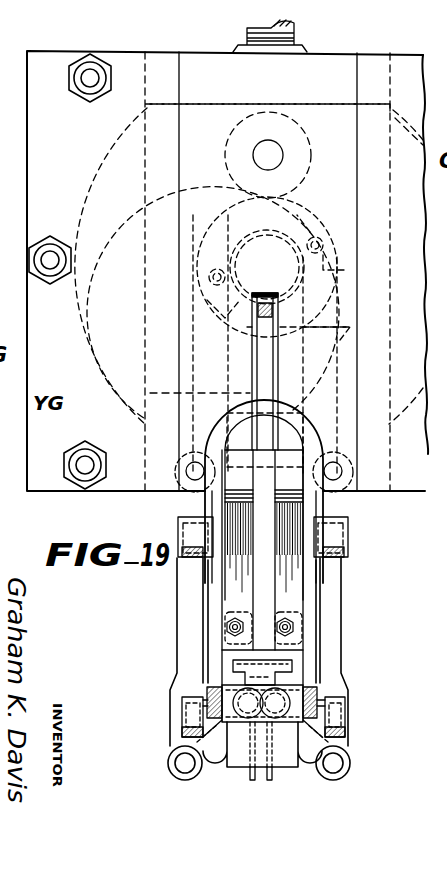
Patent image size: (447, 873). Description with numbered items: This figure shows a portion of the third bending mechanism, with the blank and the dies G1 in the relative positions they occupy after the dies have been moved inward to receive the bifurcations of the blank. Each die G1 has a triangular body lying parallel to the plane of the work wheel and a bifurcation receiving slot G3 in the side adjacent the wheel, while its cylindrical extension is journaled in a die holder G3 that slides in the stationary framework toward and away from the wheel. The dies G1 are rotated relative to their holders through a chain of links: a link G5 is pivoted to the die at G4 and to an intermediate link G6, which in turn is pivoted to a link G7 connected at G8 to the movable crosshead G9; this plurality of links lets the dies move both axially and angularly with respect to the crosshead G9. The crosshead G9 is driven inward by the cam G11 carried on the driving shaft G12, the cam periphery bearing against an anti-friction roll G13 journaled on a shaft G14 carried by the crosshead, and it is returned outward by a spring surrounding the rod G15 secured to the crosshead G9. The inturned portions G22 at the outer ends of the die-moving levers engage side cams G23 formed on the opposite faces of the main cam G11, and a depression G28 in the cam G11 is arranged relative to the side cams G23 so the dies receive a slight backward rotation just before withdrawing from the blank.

The die G1 is at (232, 743).
The die holder G3 is at (292, 668).
The pivot connection G4 is at (183, 763).
The link G5 is at (182, 709).
The intermediate link G6 is at (177, 598).
The link G7 is at (193, 503).
The pivot connection G8 is at (342, 473).
The movable crosshead G9 is at (333, 431).
The cam G11 is at (126, 218).
The driving shaft G12 is at (240, 216).
The anti-friction roll G13 is at (278, 108).
The shaft G14 is at (283, 157).
The rod G15 is at (296, 36).
The inturned portion G22 is at (260, 347).
The side cam G23 is at (332, 330).
The depression G28 is at (89, 327).